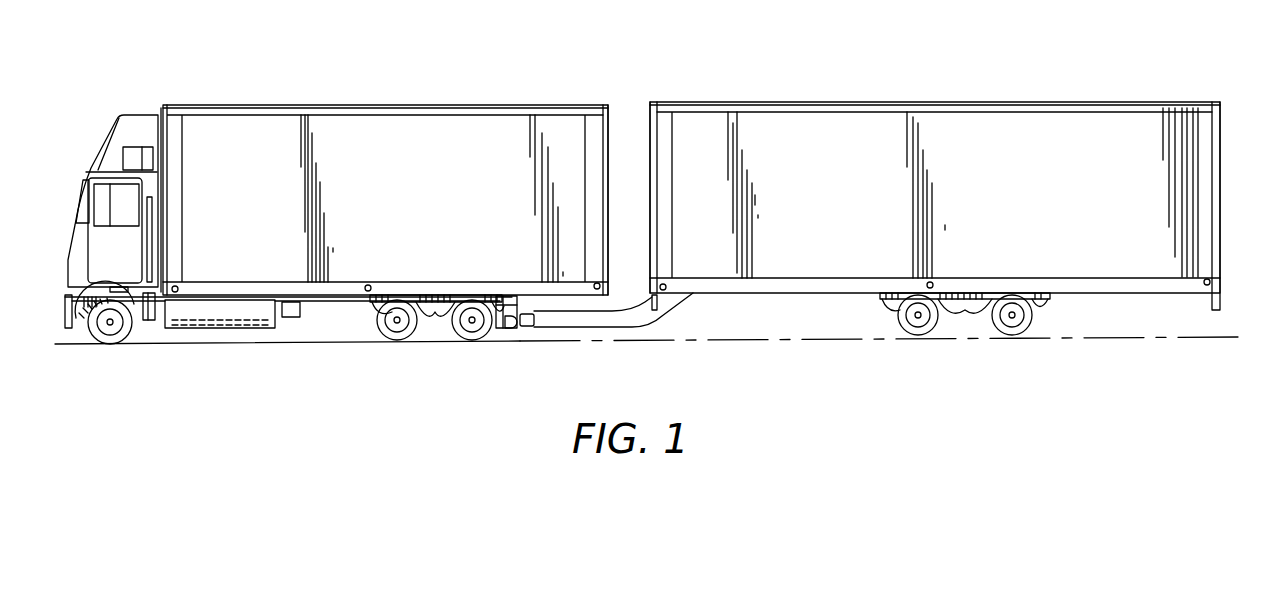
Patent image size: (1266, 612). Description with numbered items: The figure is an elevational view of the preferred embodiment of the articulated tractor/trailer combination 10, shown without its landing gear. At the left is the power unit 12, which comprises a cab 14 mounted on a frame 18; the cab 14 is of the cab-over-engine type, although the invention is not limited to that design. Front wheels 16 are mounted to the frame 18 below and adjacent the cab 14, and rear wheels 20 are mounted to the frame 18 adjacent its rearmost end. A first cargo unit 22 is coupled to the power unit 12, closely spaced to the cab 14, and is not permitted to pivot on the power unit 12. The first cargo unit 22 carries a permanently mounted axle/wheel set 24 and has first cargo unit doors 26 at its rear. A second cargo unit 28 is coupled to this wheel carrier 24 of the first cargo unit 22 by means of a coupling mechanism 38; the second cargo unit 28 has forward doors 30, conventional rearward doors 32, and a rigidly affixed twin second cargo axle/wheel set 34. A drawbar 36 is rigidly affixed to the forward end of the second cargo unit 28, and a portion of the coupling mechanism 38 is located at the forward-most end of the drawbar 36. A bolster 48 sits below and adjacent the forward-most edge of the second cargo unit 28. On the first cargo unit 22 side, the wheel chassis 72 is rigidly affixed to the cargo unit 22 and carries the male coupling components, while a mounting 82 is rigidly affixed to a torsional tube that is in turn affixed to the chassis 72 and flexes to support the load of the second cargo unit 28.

The articulated tractor/trailer combination 10 is at (622, 43).
The power unit 12 is at (252, 333).
The cab 14 is at (85, 170).
The front wheels 16 is at (106, 323).
The frame 18 is at (337, 305).
The rear wheels 20 is at (393, 338).
The first cargo unit 22 is at (368, 107).
The axle/wheel set 24 is at (470, 338).
The first cargo unit doors 26 is at (616, 108).
The second cargo unit 28 is at (870, 117).
The forward doors 30 is at (657, 118).
The rearward doors 32 is at (1220, 118).
The second cargo axle/wheel set 34 is at (932, 332).
The drawbar 36 is at (633, 317).
The second cargo unit coupling mechanism 38 is at (518, 328).
The bolster 48 is at (668, 308).
The first cargo unit wheel chassis 72 is at (494, 305).
The mounting 82 is at (537, 311).